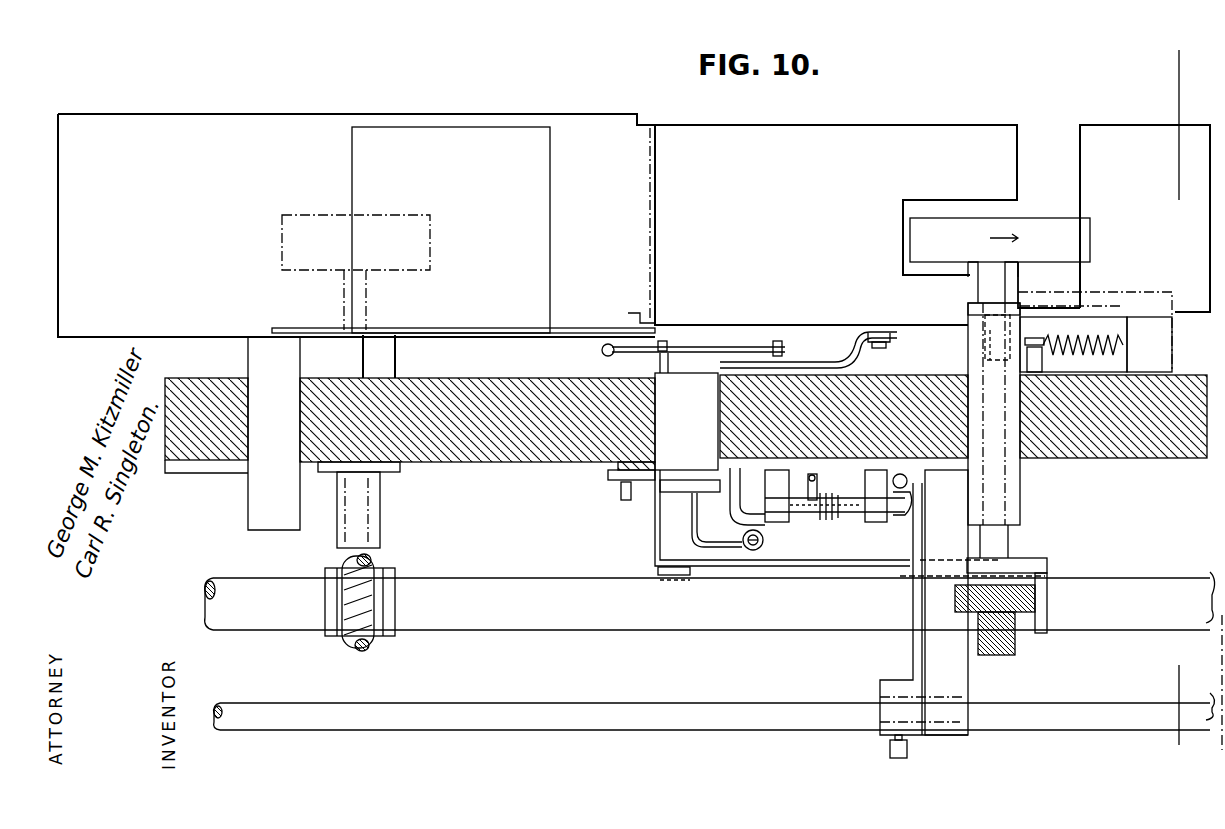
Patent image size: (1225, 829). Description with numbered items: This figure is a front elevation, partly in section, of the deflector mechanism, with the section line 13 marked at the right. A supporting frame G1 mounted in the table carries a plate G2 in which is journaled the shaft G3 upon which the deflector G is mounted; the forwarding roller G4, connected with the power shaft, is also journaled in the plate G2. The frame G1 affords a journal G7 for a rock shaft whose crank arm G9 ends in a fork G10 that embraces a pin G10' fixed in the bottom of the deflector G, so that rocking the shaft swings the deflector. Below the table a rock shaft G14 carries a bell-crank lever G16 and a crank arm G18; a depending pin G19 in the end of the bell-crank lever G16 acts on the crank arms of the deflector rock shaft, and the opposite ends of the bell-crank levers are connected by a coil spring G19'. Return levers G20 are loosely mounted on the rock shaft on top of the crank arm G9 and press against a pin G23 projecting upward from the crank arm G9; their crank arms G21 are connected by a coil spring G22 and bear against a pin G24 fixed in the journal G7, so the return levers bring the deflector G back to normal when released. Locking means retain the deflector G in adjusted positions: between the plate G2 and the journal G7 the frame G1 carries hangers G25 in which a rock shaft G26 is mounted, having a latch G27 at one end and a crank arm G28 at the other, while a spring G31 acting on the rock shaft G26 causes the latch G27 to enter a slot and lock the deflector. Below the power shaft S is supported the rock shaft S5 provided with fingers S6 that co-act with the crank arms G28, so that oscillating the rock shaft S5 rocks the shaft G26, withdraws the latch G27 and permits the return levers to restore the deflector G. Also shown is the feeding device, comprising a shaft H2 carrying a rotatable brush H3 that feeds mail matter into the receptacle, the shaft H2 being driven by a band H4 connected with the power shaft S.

The deflector G is at (878, 123).
The supporting frame G1 is at (1022, 470).
The plate G2 is at (968, 310).
The shaft G3 is at (985, 347).
The forwarding roller G4 is at (1018, 215).
The journal G7 is at (686, 421).
The crank arm G9 is at (820, 362).
The fork G10 is at (887, 318).
The pin G10' is at (874, 357).
The rock shaft G14 is at (663, 545).
The bell-crank lever G16 is at (605, 474).
The crank arm G18 is at (660, 569).
The depending pin G19 is at (590, 505).
The coil spring G19' is at (777, 543).
The return lever G20 is at (800, 343).
The crank arm G21 is at (640, 355).
The coil spring G22 is at (600, 350).
The pin G23 is at (773, 346).
The pin G24 is at (664, 340).
The hanger G25 is at (875, 525).
The rock shaft G26 is at (850, 500).
The latch G27 is at (738, 496).
The crank arm G28 is at (790, 517).
The spring G31 is at (843, 521).
The shaft H2 is at (363, 363).
The rotatable brush H3 is at (285, 218).
The band H4 is at (345, 562).
The power shaft S is at (525, 612).
The rock shaft S5 is at (615, 713).
The finger S6 is at (912, 637).
The section line 13 is at (1196, 402).